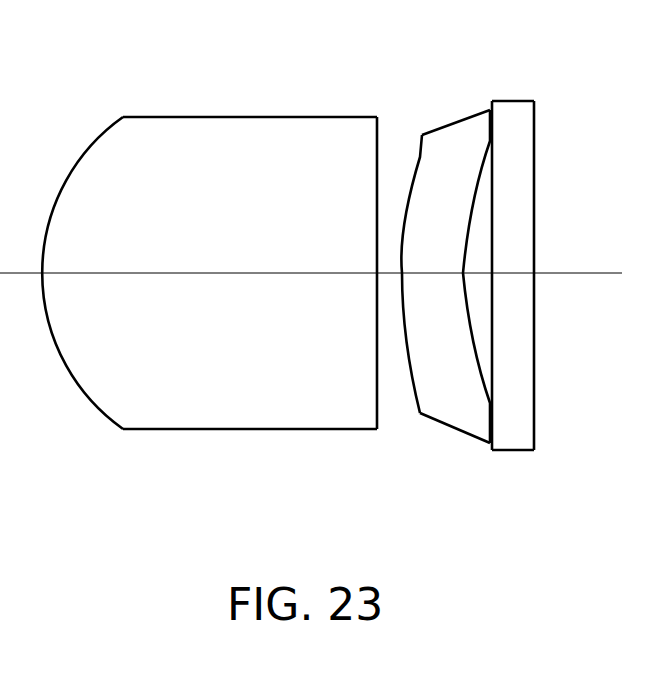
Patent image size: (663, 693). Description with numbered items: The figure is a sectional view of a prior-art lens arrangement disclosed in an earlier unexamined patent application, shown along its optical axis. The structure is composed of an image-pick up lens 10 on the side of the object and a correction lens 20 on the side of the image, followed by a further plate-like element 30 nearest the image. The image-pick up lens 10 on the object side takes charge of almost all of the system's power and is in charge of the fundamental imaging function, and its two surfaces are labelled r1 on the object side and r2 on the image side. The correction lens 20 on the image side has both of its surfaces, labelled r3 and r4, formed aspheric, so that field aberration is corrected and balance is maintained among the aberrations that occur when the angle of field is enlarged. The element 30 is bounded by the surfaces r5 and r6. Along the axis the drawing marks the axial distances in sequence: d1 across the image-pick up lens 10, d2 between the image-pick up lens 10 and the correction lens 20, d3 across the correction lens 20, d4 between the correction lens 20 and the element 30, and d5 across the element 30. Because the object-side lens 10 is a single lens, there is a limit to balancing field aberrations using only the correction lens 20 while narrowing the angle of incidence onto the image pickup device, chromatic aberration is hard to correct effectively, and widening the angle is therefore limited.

The image-pick up lens 10 is at (212, 231).
The correction lens 20 is at (439, 238).
The filter / cover glass 30 is at (551, 256).
The object-side surface of first lens r1 is at (113, 126).
The image-side surface of first lens r2 is at (378, 147).
The object-side surface of second lens r3 is at (420, 157).
The image-side surface of second lens r4 is at (488, 145).
The object-side surface of filter r5 is at (492, 147).
The image-side surface of filter r6 is at (534, 125).
The axial thickness of first lens d1 is at (197, 273).
The axial air gap between first and second lens d2 is at (388, 273).
The axial thickness of second lens d3 is at (428, 273).
The axial air gap between second lens and filter d4 is at (468, 273).
The axial thickness of filter d5 is at (512, 273).